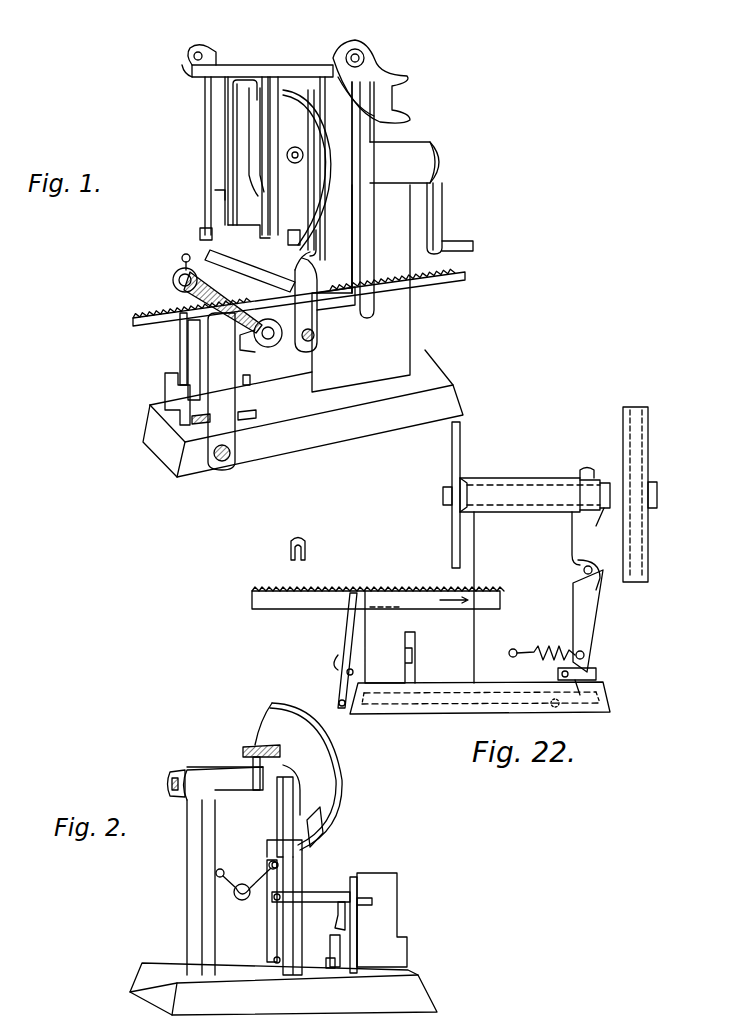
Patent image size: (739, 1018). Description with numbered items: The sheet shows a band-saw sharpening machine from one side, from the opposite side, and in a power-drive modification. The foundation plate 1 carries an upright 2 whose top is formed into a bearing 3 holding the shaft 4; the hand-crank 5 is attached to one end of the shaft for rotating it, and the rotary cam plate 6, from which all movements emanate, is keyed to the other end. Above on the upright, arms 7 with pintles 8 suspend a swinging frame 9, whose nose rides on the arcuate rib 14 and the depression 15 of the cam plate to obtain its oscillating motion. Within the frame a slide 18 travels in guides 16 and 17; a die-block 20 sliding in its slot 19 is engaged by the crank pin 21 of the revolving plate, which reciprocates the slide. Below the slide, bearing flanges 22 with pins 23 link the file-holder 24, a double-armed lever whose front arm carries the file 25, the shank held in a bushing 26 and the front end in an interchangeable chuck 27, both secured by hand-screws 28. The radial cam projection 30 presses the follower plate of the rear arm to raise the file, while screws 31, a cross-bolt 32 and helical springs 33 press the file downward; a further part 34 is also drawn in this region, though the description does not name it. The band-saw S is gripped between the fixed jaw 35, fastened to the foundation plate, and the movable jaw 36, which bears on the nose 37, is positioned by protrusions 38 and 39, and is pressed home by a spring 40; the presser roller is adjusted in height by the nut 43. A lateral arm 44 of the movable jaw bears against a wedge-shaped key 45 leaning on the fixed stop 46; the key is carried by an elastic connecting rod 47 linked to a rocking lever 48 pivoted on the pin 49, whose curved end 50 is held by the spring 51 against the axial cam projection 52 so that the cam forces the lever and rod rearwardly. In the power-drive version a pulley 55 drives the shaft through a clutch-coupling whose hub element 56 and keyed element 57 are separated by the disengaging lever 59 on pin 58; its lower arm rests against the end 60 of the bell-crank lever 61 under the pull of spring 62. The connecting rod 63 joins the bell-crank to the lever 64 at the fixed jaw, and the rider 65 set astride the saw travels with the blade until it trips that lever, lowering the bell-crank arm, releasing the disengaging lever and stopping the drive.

In FIG. 1, the foundation plate 1 is at (432, 385).
In FIG. 2, the foundation plate 1 is at (418, 995).
In FIG. 1, the upright 2 is at (402, 328).
In FIG. 22, the upright 2 is at (530, 521).
In FIG. 2, the upright 2 is at (186, 876).
In FIG. 1, the bearing 3 is at (402, 148).
In FIG. 2, the bearing 3 is at (218, 768).
In FIG. 1, the shaft 4 is at (295, 147).
In FIG. 22, the shaft 4 is at (442, 495).
In FIG. 2, the shaft 4 is at (173, 775).
In FIG. 1, the hand-crank 5 is at (440, 205).
In FIG. 1, the rotary cam plate 6 is at (306, 84).
In FIG. 22, the rotary cam plate 6 is at (451, 537).
In FIG. 2, the rotary cam plate 6 is at (298, 776).
In FIG. 1, the arms 7 is at (195, 79).
In FIG. 1, the pintles 8 is at (200, 50).
In FIG. 1, the frame 9 is at (375, 238).
In FIG. 1, the arcuate rib 14 is at (248, 135).
In FIG. 1, the depression 15 is at (250, 178).
In FIG. 1, the guide 16 is at (357, 322).
In FIG. 1, the guide 17 is at (206, 83).
In FIG. 1, the slide 18 is at (275, 77).
In FIG. 1, the slot 19 is at (264, 77).
In FIG. 1, the die-block 20 is at (240, 226).
In FIG. 1, the crank pin 21 is at (293, 240).
In FIG. 1, the bearing flanges 22 is at (314, 332).
In FIG. 1, the pins 23 is at (306, 352).
In FIG. 1, the file-holder 24 is at (282, 345).
In FIG. 1, the file 25 is at (222, 299).
In FIG. 1, the bushing 26 is at (266, 342).
In FIG. 1, the chuck 27 is at (173, 280).
In FIG. 1, the hand-screws 28 is at (181, 258).
In FIG. 1, the radial cam projection 30 is at (356, 170).
In FIG. 2, the radial cam projection 30 is at (296, 705).
In FIG. 1, the screws 31 is at (205, 232).
In FIG. 1, the cross-bolt 32 is at (228, 252).
In FIG. 1, the helical springs 33 is at (214, 195).
In FIG. 1, the link 34 is at (306, 262).
In FIG. 1, the fixed gripping jaw 35 is at (179, 345).
In FIG. 2, the fixed gripping jaw 35 is at (392, 887).
In FIG. 1, the movable gripping jaw 36 is at (198, 358).
In FIG. 2, the movable gripping jaw 36 is at (355, 876).
In FIG. 1, the nose 37 is at (250, 415).
In FIG. 2, the nose 37 is at (330, 960).
In FIG. 1, the protrusion 38 is at (176, 390).
In FIG. 1, the protrusion 39 is at (252, 380).
In FIG. 2, the protrusion 39 is at (332, 935).
In FIG. 1, the spring 40 is at (221, 391).
In FIG. 1, the nut 43 is at (200, 421).
In FIG. 2, the lateral arm 44 is at (338, 908).
In FIG. 2, the wedge-shaped key 45 is at (372, 901).
In FIG. 2, the fixed stop 46 is at (360, 917).
In FIG. 2, the elastic connecting rod 47 is at (312, 893).
In FIG. 2, the rocking lever 48 is at (272, 920).
In FIG. 2, the pin 49 is at (274, 960).
In FIG. 2, the curved end 50 is at (284, 842).
In FIG. 2, the spring 51 is at (240, 882).
In FIG. 2, the axial cam projection 52 is at (326, 823).
In FIG. 22, the pulley 55 is at (622, 425).
In FIG. 22, the clutch element 56 is at (606, 480).
In FIG. 22, the clutch element 57 is at (585, 478).
In FIG. 22, the pin 58 is at (583, 570).
In FIG. 22, the disengaging lever 59 is at (604, 600).
In FIG. 22, the end of bell-crank lever 60 is at (598, 675).
In FIG. 22, the bell-crank lever 61 is at (576, 681).
In FIG. 22, the spring 62 is at (546, 648).
In FIG. 22, the connecting rod 63 is at (447, 706).
In FIG. 22, the lever 64 is at (345, 656).
In FIG. 22, the rider 65 is at (290, 542).
In FIG. 1, the band-saw S is at (134, 323).
In FIG. 22, the band-saw S is at (428, 591).